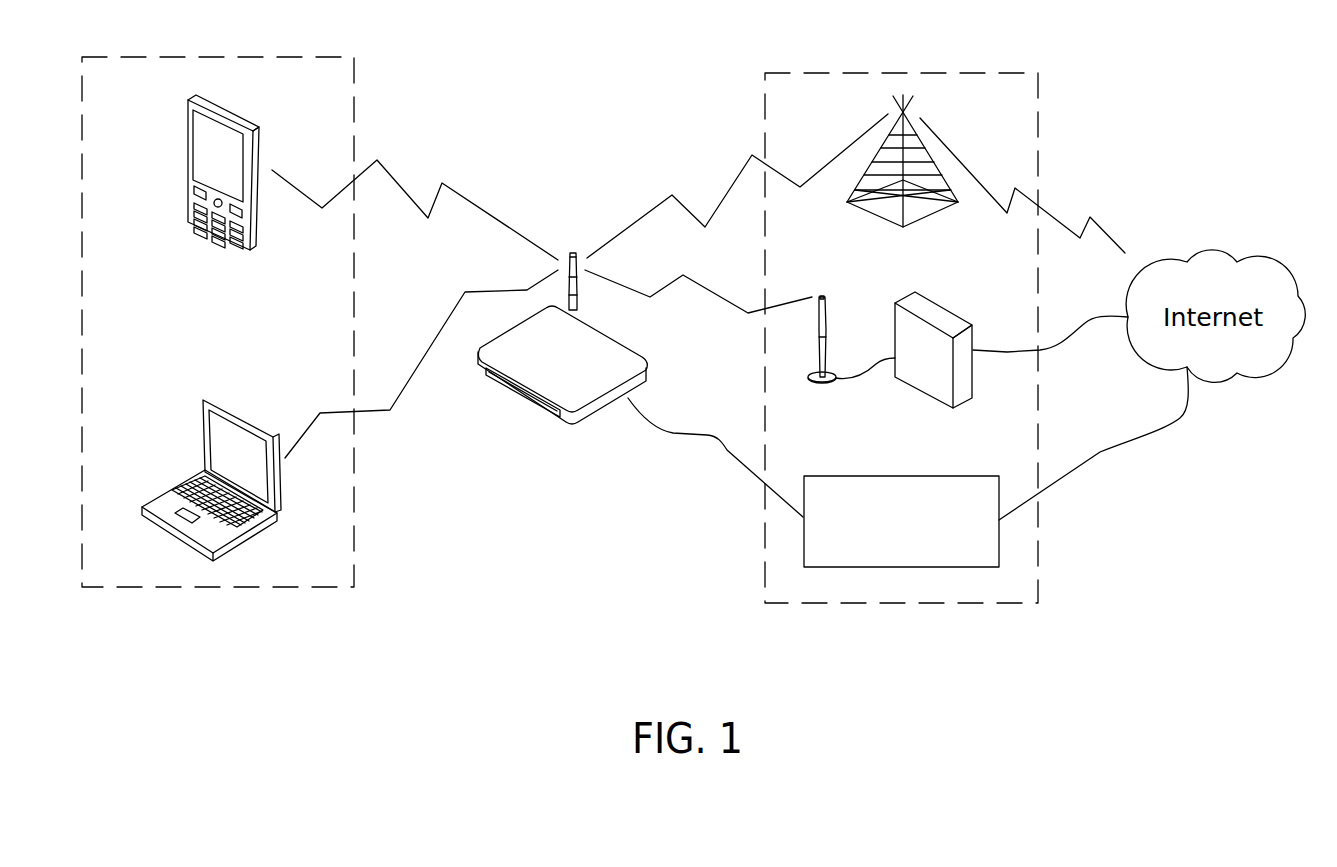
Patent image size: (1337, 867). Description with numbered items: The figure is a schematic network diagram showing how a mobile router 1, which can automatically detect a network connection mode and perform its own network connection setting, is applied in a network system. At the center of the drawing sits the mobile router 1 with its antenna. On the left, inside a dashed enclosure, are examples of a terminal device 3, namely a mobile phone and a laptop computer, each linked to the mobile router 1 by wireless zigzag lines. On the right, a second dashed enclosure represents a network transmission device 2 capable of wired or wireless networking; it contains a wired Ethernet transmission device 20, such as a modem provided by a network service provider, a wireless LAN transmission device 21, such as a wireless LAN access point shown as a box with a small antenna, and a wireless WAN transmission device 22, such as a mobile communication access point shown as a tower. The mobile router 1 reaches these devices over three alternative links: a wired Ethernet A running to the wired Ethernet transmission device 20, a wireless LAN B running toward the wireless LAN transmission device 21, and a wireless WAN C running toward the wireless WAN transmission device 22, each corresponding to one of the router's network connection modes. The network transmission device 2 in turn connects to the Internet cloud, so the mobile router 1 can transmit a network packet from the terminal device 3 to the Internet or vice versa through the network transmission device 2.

The mobile router 1 is at (580, 392).
The network transmission device 2 is at (926, 374).
The terminal device 3 is at (199, 568).
The wired Ethernet transmission device 20 is at (962, 547).
The wireless LAN transmission device 21 is at (962, 377).
The wireless WAN transmission device 22 is at (923, 205).
The wired Ethernet A is at (710, 437).
The wireless LAN B is at (710, 293).
The wireless WAN C is at (682, 202).